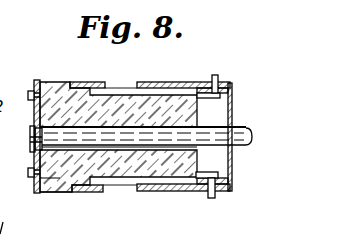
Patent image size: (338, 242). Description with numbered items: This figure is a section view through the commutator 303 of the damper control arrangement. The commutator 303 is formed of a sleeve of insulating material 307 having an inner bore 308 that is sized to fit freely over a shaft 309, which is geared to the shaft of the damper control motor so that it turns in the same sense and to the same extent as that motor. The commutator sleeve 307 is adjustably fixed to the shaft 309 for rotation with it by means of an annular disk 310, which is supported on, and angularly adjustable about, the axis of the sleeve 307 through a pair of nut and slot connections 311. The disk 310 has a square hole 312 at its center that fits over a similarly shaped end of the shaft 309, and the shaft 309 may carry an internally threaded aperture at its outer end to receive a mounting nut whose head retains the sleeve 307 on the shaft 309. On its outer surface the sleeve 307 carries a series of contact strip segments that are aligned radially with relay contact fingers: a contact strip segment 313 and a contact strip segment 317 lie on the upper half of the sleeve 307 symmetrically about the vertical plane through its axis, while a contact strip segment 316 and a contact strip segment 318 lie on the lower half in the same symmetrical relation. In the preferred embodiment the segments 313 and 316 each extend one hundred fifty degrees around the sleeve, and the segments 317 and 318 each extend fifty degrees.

The commutator 303 is at (46, 76).
The sleeve of insulating material 307 is at (63, 187).
The inner bore 308 is at (207, 146).
The shaft 309 is at (245, 127).
The annular disk 310 is at (42, 178).
The nut and slot connections 311 is at (30, 94).
The square hole 312 is at (49, 118).
The contact strip segment 313 is at (82, 82).
The contact strip segment 316 is at (96, 194).
The contact strip segment 317 is at (157, 82).
The contact strip segment 318 is at (153, 190).